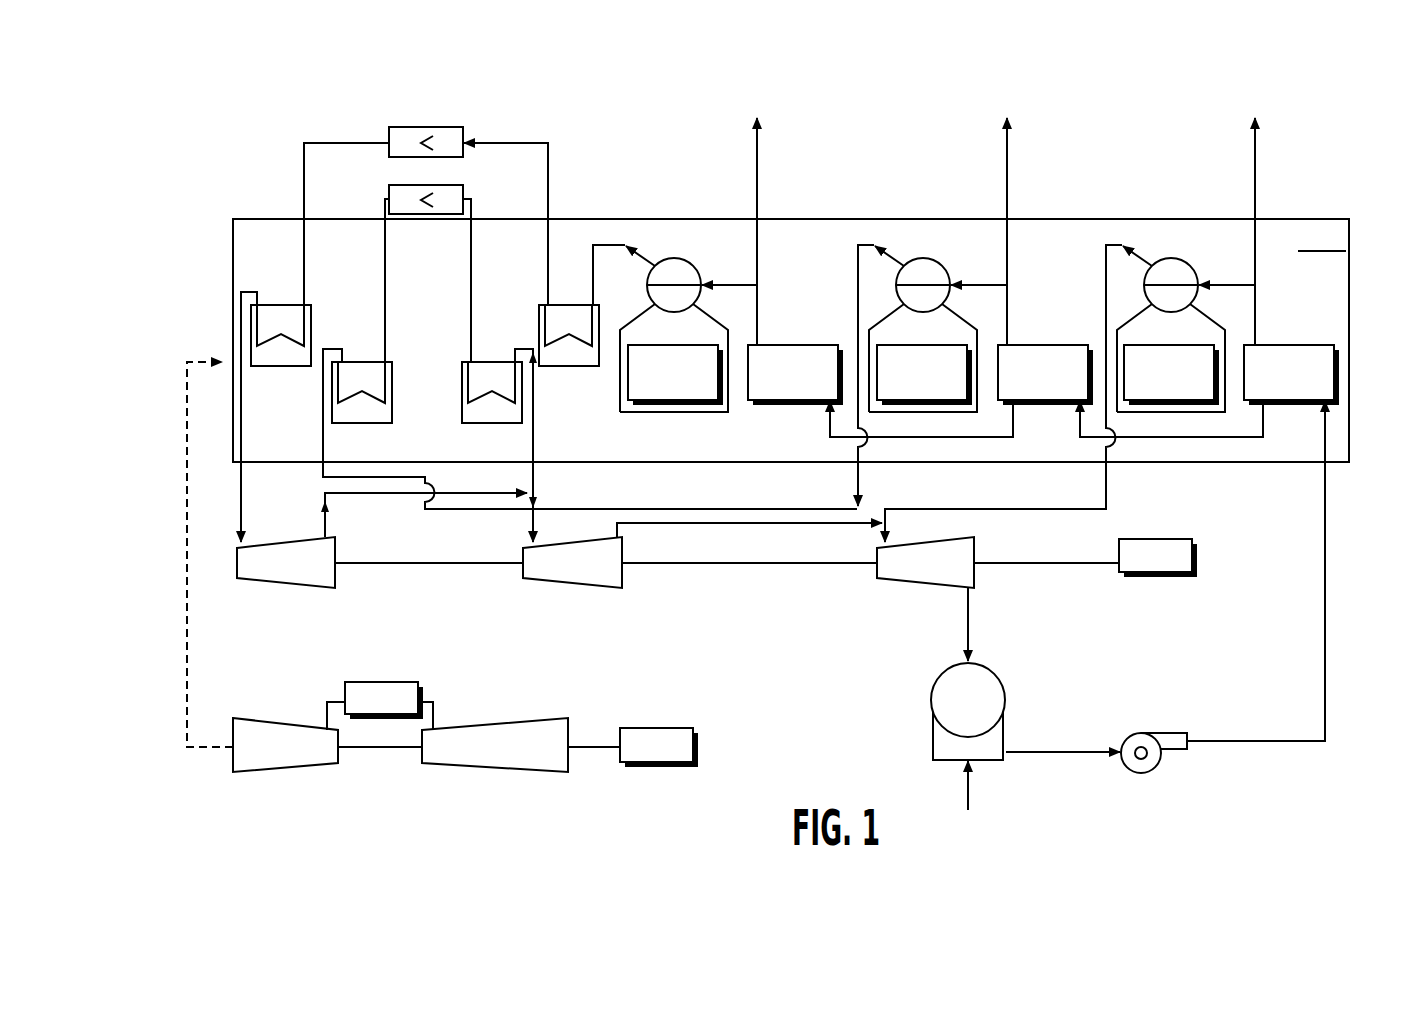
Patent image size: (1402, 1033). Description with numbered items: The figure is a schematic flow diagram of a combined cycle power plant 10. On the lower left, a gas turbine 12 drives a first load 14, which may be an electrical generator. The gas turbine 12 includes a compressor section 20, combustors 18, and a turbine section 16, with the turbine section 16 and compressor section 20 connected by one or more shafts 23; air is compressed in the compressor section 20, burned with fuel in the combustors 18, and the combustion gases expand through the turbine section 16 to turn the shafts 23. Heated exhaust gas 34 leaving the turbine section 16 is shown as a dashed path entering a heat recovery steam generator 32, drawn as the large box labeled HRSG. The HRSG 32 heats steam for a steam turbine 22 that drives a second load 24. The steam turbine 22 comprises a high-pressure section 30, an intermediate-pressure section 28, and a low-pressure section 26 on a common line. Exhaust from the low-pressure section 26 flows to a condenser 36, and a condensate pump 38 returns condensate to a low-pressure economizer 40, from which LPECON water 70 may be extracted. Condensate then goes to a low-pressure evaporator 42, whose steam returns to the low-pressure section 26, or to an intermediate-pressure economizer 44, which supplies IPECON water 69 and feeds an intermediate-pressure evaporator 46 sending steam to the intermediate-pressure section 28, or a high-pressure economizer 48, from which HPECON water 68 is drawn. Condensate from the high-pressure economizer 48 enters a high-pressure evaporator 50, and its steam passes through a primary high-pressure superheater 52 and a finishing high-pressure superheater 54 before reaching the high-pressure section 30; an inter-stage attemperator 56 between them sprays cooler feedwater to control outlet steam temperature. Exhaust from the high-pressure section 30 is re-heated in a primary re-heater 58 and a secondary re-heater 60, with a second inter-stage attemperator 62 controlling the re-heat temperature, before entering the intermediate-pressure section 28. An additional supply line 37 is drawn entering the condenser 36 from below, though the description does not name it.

The combined cycle power plant 10 is at (271, 110).
The gas turbine 12 is at (305, 800).
The first load 14 is at (660, 728).
The turbine section 16 is at (286, 723).
The combustors 18 is at (372, 682).
The compressor section 20 is at (500, 723).
The steam turbine 22 is at (661, 598).
The shafts 23 is at (395, 748).
The second load 24 is at (1160, 539).
The low-pressure section 26 is at (930, 588).
The intermediate-pressure section 28 is at (585, 588).
The high-pressure section 30 is at (298, 588).
The heat recovery steam generator 32 is at (608, 219).
The heated exhaust gas 34 is at (187, 632).
The condenser 36 is at (931, 727).
The makeup water supply 37 is at (970, 785).
The condensate pump 38 is at (1141, 773).
The low-pressure economizer 40 is at (1297, 345).
The low-pressure evaporator 42 is at (1209, 318).
The intermediate-pressure economizer 44 is at (1047, 345).
The intermediate-pressure evaporator 46 is at (961, 320).
The high-pressure economizer 48 is at (797, 345).
The high-pressure evaporator 50 is at (712, 320).
The primary high-pressure superheater 52 is at (565, 366).
The finishing high-pressure superheater 54 is at (268, 366).
The inter-stage attemperator 56 is at (456, 157).
The primary re-heater 58 is at (462, 378).
The secondary re-heater 60 is at (392, 392).
The inter-stage attemperator 62 is at (389, 187).
The HPECON water 68 is at (757, 160).
The IPECON water 69 is at (1007, 160).
The LPECON water 70 is at (1255, 160).